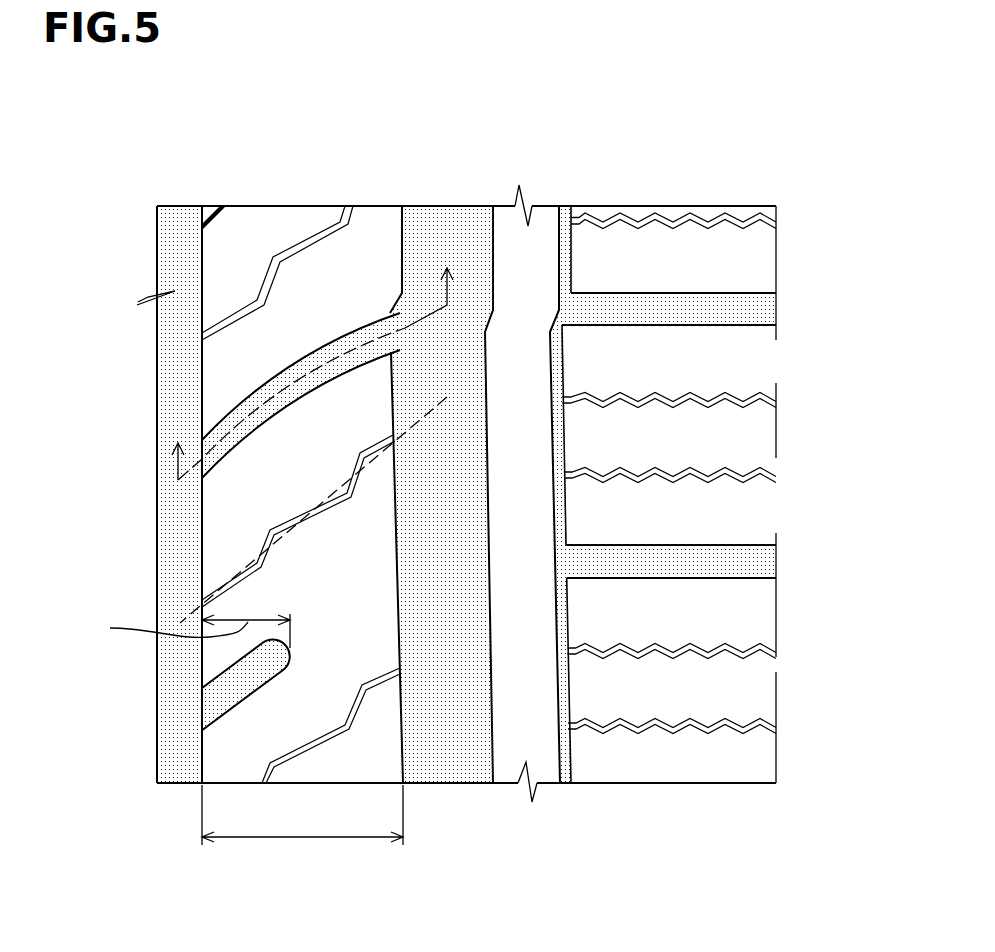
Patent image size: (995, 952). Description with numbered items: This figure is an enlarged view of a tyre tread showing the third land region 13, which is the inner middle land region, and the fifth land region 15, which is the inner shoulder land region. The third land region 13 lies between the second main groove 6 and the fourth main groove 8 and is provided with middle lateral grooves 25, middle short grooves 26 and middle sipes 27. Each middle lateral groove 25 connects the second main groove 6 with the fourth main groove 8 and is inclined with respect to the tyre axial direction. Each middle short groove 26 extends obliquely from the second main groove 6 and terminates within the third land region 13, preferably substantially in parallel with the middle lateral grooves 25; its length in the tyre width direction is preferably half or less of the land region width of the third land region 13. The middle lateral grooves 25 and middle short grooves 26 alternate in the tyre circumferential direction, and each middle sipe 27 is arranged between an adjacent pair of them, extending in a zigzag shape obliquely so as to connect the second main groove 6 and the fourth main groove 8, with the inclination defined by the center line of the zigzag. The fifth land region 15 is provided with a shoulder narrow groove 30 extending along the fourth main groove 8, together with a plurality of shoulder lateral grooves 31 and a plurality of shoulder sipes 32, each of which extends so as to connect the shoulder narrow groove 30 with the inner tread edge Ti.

The second main groove 6 is at (180, 252).
The fourth main groove 8 is at (471, 250).
The third land region 13 is at (398, 195).
The fifth land region 15 is at (773, 195).
The middle lateral groove 25 is at (268, 386).
The middle short groove 26 is at (232, 662).
The middle sipe 27 is at (258, 532).
The shoulder narrow groove 30 is at (568, 687).
The shoulder lateral groove 31 is at (720, 327).
The shoulder sipe 32 is at (748, 475).
The inner tread edge Ti is at (777, 260).